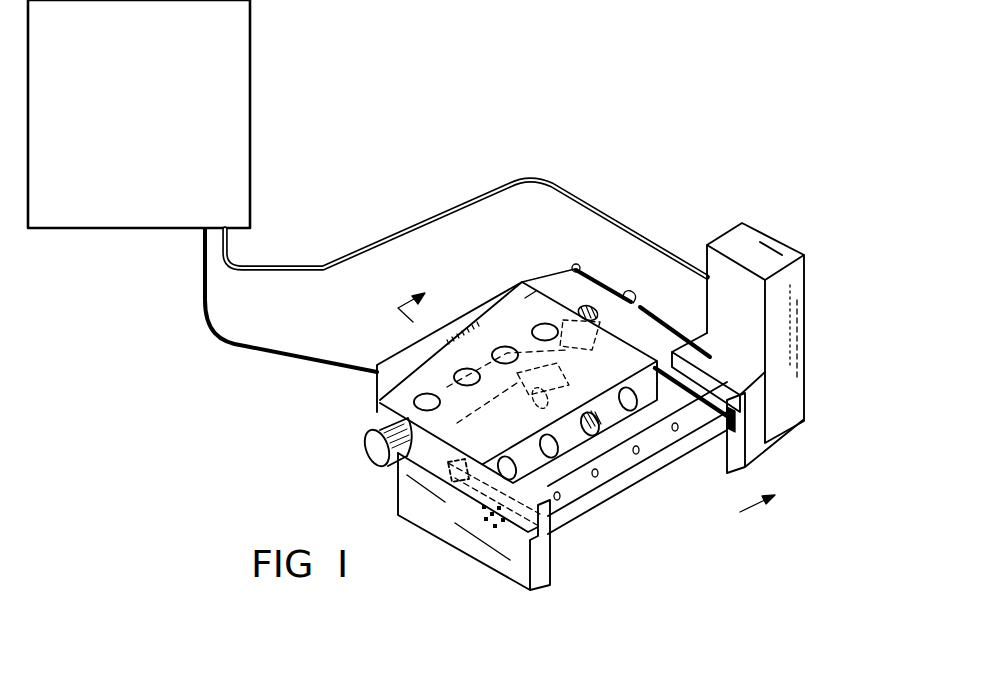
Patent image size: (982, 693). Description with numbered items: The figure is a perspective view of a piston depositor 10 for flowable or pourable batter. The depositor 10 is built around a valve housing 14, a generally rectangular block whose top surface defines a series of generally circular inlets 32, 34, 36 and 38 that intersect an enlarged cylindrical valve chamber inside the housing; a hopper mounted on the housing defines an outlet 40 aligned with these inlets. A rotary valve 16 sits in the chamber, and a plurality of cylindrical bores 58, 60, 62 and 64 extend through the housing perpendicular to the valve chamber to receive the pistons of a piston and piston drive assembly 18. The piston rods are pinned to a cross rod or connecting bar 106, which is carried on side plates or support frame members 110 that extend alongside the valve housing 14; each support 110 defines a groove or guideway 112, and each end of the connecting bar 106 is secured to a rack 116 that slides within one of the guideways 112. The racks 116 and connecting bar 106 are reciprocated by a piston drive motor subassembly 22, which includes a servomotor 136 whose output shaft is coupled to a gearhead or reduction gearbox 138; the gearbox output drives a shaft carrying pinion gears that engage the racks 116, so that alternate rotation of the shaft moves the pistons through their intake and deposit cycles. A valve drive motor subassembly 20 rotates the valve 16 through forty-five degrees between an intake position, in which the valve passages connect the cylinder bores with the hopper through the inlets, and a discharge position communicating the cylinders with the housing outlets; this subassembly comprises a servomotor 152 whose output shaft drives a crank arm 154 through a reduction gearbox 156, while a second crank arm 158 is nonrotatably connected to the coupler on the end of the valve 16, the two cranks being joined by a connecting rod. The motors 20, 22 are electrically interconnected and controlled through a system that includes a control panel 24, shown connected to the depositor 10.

The piston depositor 10 is at (572, 172).
The valve housing 14 is at (393, 397).
The rotary valve 16 is at (365, 457).
The piston and piston drive assembly 18 is at (640, 478).
The valve drive motor subassembly 20 is at (511, 278).
The piston drive motor subassembly 22 is at (793, 237).
The panel 24 is at (240, 86).
The inlet 32 is at (543, 324).
The inlet 34 is at (503, 347).
The inlet 36 is at (458, 371).
The inlet 38 is at (420, 394).
The outlet 40 is at (377, 411).
The cylindrical bore 58 is at (631, 390).
The cylindrical bore 60 is at (593, 428).
The cylindrical bore 62 is at (540, 438).
The cylindrical bore 64 is at (465, 490).
The connecting bar 106 is at (652, 440).
The support frame member 110 is at (513, 567).
The guideway 112 is at (548, 524).
The rack 116 is at (675, 350).
The servomotor 136 is at (747, 243).
The reduction gearbox 138 is at (722, 362).
The servomotor 152 is at (470, 323).
The crank arm 154 is at (582, 300).
The reduction gearbox 156 is at (525, 297).
The second crank arm 158 is at (634, 304).